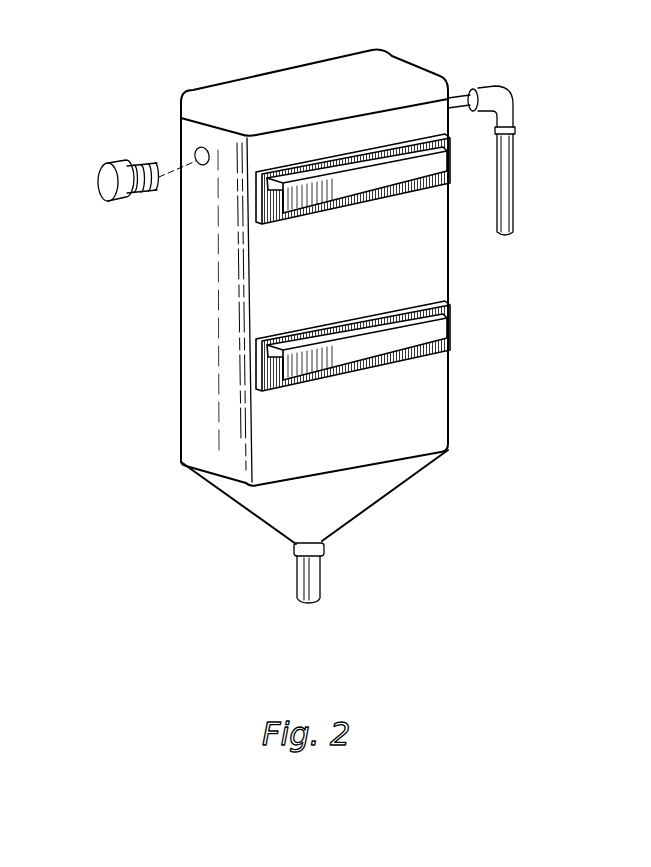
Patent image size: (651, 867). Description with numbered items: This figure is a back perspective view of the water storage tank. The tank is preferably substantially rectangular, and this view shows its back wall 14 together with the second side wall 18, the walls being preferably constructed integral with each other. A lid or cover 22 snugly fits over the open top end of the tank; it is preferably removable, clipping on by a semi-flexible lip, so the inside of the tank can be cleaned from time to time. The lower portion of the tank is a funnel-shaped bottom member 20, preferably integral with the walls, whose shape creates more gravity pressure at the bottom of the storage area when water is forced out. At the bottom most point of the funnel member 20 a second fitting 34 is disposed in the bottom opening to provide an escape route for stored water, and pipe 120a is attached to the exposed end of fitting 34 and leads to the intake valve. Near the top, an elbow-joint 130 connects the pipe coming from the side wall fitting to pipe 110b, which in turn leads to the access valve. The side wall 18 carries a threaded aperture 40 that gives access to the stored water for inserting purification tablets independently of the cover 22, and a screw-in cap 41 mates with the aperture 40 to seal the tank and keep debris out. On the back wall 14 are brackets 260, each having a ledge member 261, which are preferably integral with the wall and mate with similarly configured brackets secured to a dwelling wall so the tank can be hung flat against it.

The back wall 14 is at (275, 443).
The second side wall 18 is at (207, 341).
The funnel-shaped bottom member 20 is at (365, 492).
The lid or cover 22 is at (290, 95).
The second fitting 34 is at (293, 545).
The threaded aperture 40 is at (197, 152).
The screw-in cap 41 is at (107, 182).
The pipe 110b is at (513, 167).
The pipe 120a is at (297, 583).
The elbow-joint 130 is at (500, 102).
The bracket 260 is at (256, 206).
The ledge member 261 is at (396, 177).